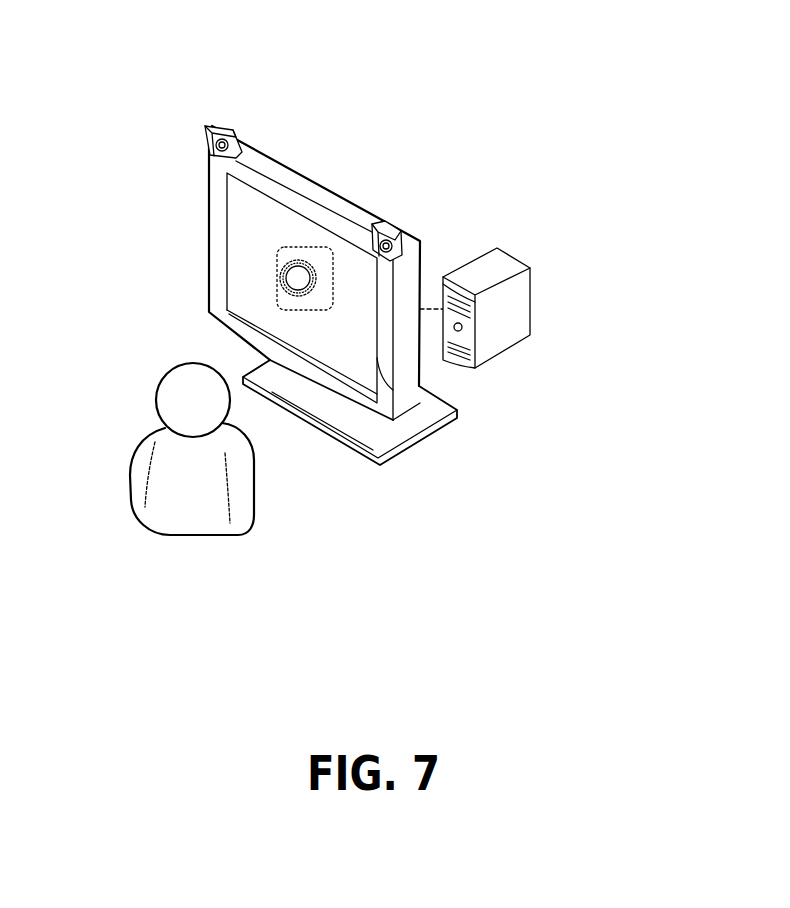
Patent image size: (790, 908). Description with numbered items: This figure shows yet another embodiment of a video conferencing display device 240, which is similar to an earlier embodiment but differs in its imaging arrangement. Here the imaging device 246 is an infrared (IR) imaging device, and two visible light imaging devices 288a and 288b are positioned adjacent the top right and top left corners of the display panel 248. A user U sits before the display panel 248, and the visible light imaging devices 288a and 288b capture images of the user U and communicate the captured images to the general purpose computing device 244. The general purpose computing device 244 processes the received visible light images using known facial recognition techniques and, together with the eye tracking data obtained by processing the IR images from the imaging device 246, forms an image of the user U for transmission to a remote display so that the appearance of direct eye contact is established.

The video conferencing display device 240 is at (518, 112).
The general purpose computing device 244 is at (493, 365).
The imaging device 246 is at (282, 270).
The display panel 248 is at (410, 388).
The visible light imaging device 288a is at (242, 131).
The visible light imaging device 288b is at (405, 233).
The user U is at (170, 532).